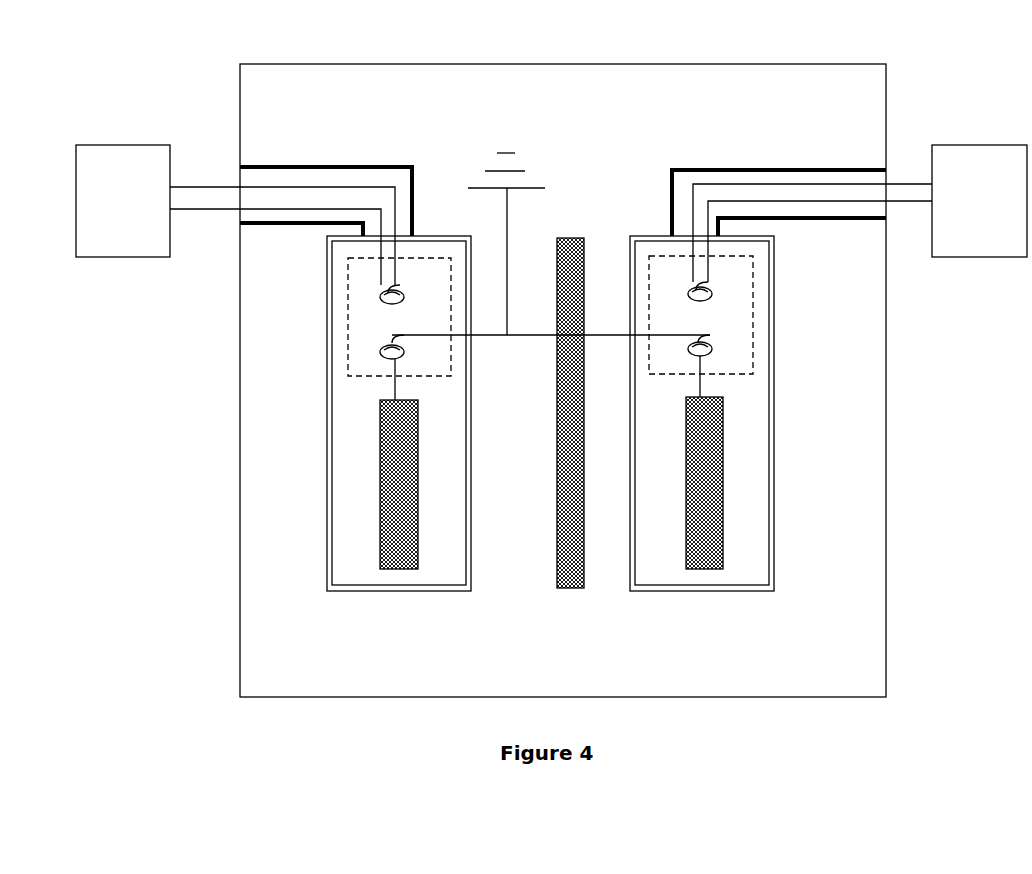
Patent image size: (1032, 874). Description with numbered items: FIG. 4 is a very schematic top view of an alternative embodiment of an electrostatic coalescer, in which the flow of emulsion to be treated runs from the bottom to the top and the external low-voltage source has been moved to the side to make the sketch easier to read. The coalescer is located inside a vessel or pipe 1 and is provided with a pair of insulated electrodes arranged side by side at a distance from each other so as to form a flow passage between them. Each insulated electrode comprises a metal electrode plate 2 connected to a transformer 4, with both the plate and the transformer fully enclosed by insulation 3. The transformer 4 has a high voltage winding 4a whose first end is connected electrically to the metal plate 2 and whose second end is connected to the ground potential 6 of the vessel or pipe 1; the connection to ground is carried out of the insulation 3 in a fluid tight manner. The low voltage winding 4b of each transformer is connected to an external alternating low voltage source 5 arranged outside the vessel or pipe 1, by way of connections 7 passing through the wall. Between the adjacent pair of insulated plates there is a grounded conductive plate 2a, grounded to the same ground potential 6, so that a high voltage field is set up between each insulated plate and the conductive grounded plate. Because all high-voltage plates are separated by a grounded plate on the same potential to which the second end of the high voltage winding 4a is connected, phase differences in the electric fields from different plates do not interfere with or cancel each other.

The vessel or pipe 1 is at (668, 63).
The metal electrode plate 2 is at (380, 450).
The grounded conductive plate 2a is at (583, 588).
The insulation 3 is at (333, 393).
The transformer 4 is at (348, 273).
The high voltage winding 4a is at (567, 367).
The low voltage winding 4b is at (567, 295).
The external alternating low voltage source 5 is at (551, 201).
The ground potential 6 is at (513, 244).
The wiring 7 is at (333, 165).